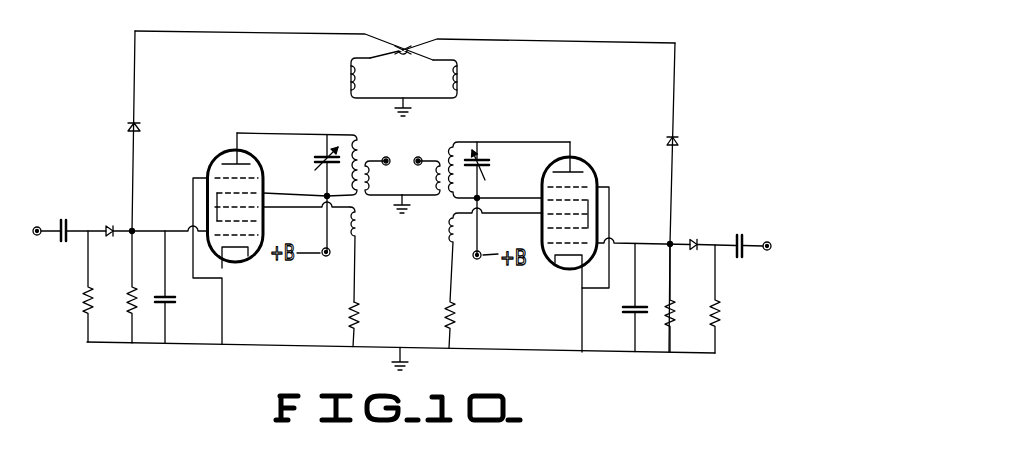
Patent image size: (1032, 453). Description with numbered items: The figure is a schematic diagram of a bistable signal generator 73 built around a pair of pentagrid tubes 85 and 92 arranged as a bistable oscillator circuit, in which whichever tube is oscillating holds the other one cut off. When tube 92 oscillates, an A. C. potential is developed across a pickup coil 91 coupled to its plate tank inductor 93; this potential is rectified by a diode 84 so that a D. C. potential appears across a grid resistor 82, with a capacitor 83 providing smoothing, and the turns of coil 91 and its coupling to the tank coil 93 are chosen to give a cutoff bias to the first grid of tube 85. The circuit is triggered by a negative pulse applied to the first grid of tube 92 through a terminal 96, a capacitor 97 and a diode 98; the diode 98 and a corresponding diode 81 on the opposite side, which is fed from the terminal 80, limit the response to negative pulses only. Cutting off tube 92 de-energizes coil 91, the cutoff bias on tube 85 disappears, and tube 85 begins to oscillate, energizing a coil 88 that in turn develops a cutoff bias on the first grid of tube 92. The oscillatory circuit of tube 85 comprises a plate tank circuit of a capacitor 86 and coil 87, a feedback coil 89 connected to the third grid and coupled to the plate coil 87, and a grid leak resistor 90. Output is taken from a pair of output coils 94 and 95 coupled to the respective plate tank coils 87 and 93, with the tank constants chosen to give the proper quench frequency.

The generator 73 is at (404, 34).
The input terminal 80 is at (36, 226).
The diode 81 is at (108, 226).
The grid resistor 82 is at (128, 292).
The capacitor 83 is at (176, 300).
The diode 84 is at (131, 130).
The pentagrid tube 85 is at (212, 156).
The capacitor 86 is at (314, 160).
The plate tank coil 87 is at (357, 143).
The coil 88 is at (349, 72).
The feedback coil 89 is at (362, 232).
The grid leak resistor 90 is at (348, 310).
The pickup coil 91 is at (459, 72).
The pentagrid tube 92 is at (591, 164).
The plate tank inductor 93 is at (447, 146).
The output coil 94 is at (371, 178).
The output coil 95 is at (433, 176).
The terminal 96 is at (767, 240).
The capacitor 97 is at (740, 259).
The diode 98 is at (693, 239).